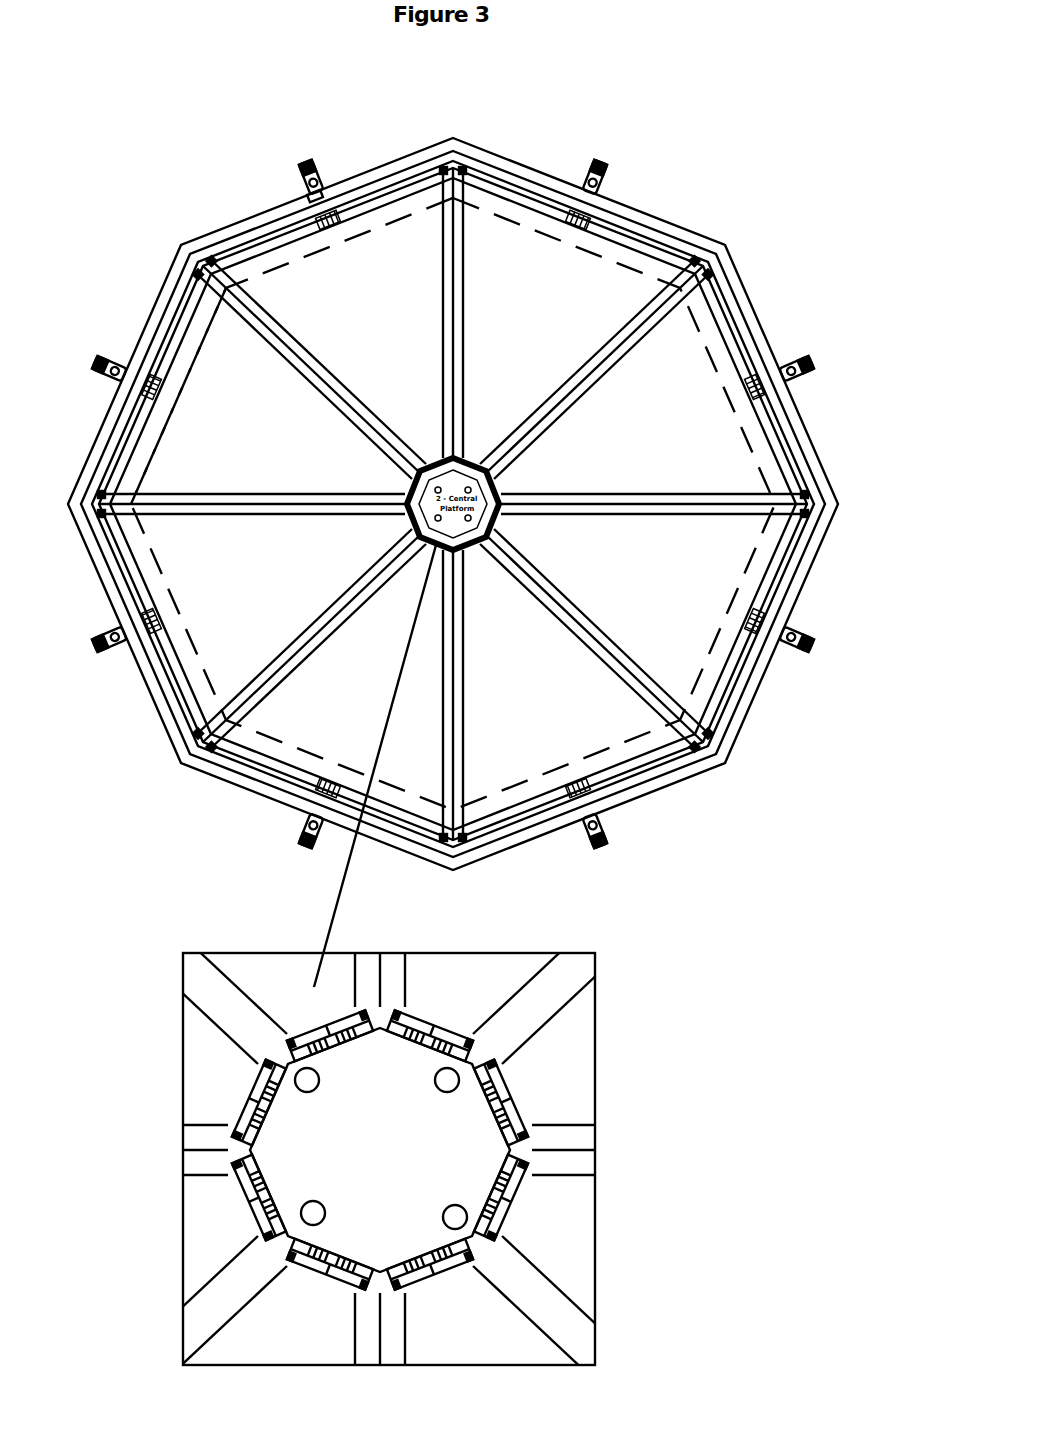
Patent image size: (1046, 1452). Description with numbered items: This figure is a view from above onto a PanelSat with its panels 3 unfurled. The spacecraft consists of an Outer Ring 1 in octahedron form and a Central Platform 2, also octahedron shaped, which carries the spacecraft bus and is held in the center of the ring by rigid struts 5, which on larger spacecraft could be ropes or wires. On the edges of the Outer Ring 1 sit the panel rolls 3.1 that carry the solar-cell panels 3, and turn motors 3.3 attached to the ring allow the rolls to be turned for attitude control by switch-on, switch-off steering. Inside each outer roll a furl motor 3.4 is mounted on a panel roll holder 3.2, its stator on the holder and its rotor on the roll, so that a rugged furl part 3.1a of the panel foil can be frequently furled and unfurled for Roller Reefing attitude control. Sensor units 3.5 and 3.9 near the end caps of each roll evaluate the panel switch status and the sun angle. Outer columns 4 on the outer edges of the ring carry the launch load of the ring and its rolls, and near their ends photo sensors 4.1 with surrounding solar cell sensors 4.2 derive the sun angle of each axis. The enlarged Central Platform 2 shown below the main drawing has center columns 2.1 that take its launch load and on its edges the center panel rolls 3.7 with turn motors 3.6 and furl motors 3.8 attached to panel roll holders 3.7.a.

The Outer Ring 1 is at (174, 294).
The Central Platform 2 is at (380, 1150).
The center columns 2.1 is at (452, 1080).
The panels 3 is at (453, 504).
The panel rolls 3.1 is at (242, 238).
The rugged furl part 3.1a is at (172, 427).
The panel roll holder 3.2 is at (275, 214).
The turn motor 3.3 is at (328, 204).
The furl motor 3.4 is at (318, 196).
The sensor unit 3.5 is at (456, 166).
The turn motor 3.6 is at (519, 1100).
The center panel rolls 3.7 is at (526, 1190).
The panel roll holder 3.7.a is at (495, 1233).
The furl motor 3.8 is at (524, 1093).
The sensor unit 3.9 is at (535, 1137).
The outer columns 4 is at (112, 368).
The photo sensors 4.1 is at (588, 162).
The solar cell sensors 4.2 is at (598, 163).
The struts 5 is at (451, 361).